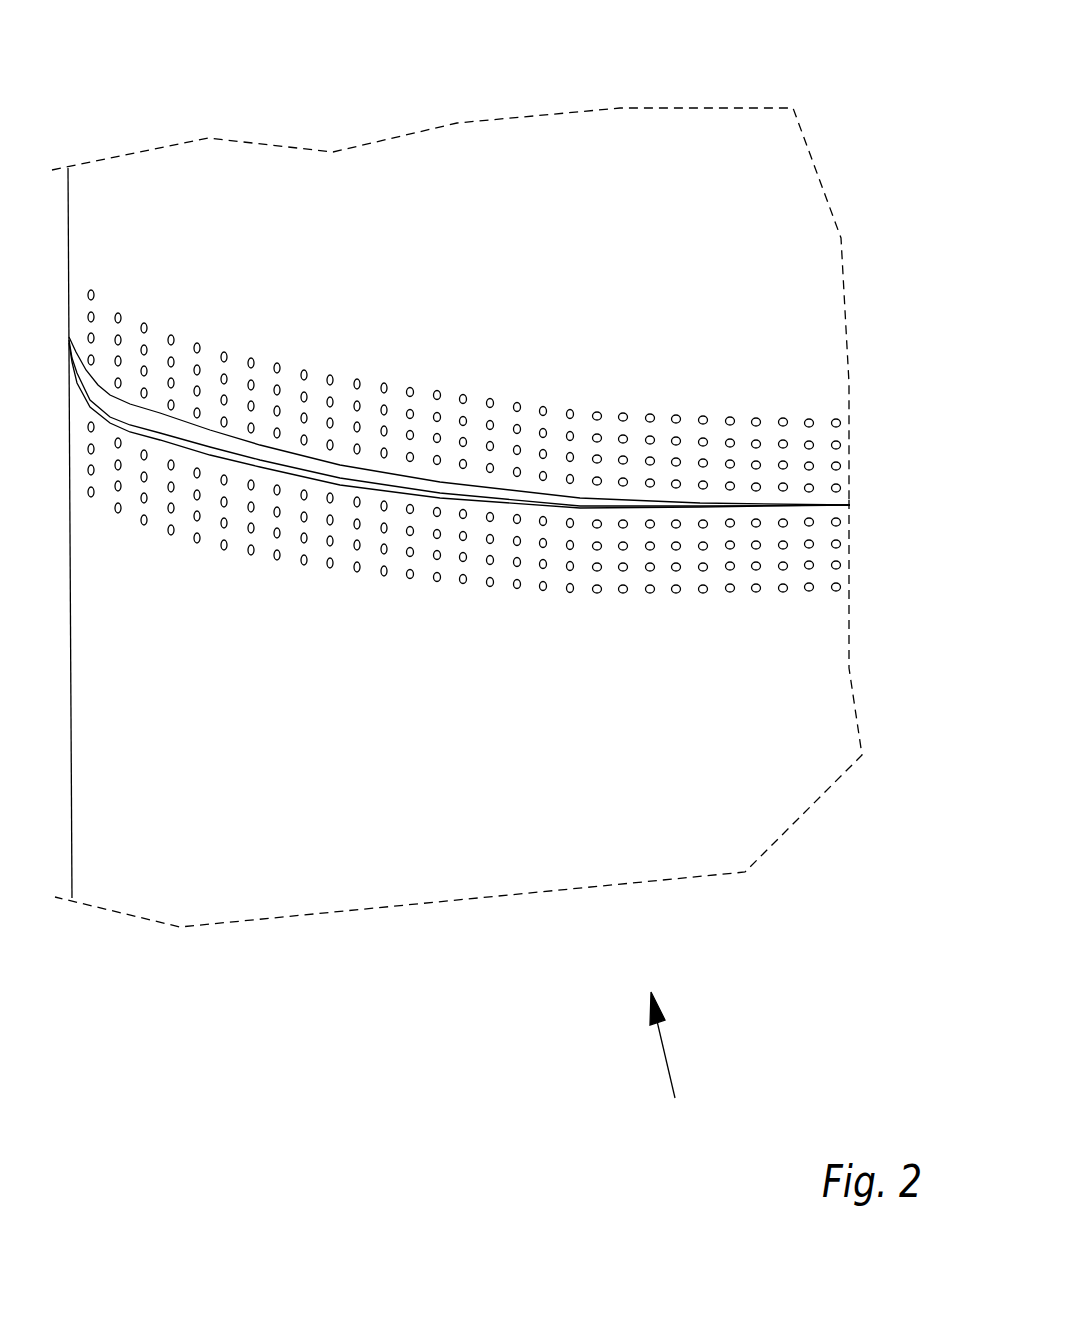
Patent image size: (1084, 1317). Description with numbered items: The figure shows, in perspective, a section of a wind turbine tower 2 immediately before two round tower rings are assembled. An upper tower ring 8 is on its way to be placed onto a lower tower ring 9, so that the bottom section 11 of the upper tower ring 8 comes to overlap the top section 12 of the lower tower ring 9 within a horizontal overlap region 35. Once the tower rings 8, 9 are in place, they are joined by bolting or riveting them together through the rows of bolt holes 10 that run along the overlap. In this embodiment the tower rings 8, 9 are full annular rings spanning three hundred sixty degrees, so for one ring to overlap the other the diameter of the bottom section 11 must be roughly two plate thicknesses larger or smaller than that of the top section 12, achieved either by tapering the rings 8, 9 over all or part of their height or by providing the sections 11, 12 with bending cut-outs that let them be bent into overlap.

The wind turbine tower 2 is at (667, 1065).
The upper tower ring 8 is at (333, 247).
The lower tower ring 9 is at (457, 810).
The bolt holes 10 is at (782, 443).
The bottom section 11 is at (795, 475).
The top section 12 is at (795, 535).
The horizontal overlap region 35 is at (717, 522).